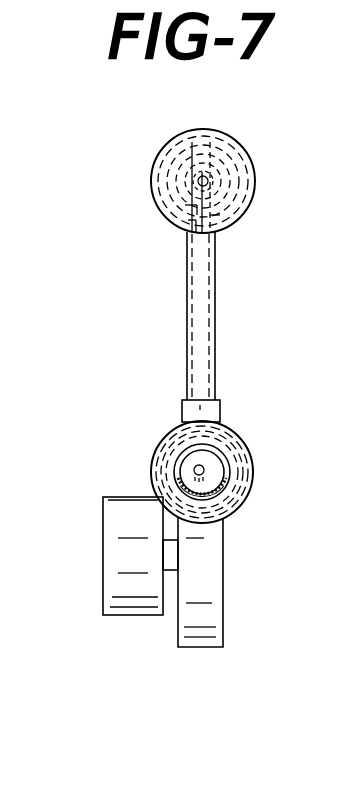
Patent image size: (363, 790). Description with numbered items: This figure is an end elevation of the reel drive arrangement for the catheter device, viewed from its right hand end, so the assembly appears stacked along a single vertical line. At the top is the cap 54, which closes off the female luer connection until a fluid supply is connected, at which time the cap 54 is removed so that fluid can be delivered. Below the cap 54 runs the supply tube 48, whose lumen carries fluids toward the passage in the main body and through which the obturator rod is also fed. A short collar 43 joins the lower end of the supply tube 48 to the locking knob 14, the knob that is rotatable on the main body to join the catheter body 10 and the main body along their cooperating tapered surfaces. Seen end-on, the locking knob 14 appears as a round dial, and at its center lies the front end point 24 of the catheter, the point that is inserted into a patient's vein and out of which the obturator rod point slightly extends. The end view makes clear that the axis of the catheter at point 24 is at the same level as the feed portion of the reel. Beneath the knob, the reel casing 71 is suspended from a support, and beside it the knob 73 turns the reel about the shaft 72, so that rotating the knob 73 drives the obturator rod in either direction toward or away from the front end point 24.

The cap 54 is at (250, 150).
The supply tube 48 is at (216, 270).
The collar 43 is at (220, 403).
The locking knob 14 is at (160, 447).
The front end point 24 is at (205, 468).
The catheter body 10 is at (212, 478).
The knob 73 is at (115, 530).
The reel casing 71 is at (225, 553).
The shaft 72 is at (175, 573).